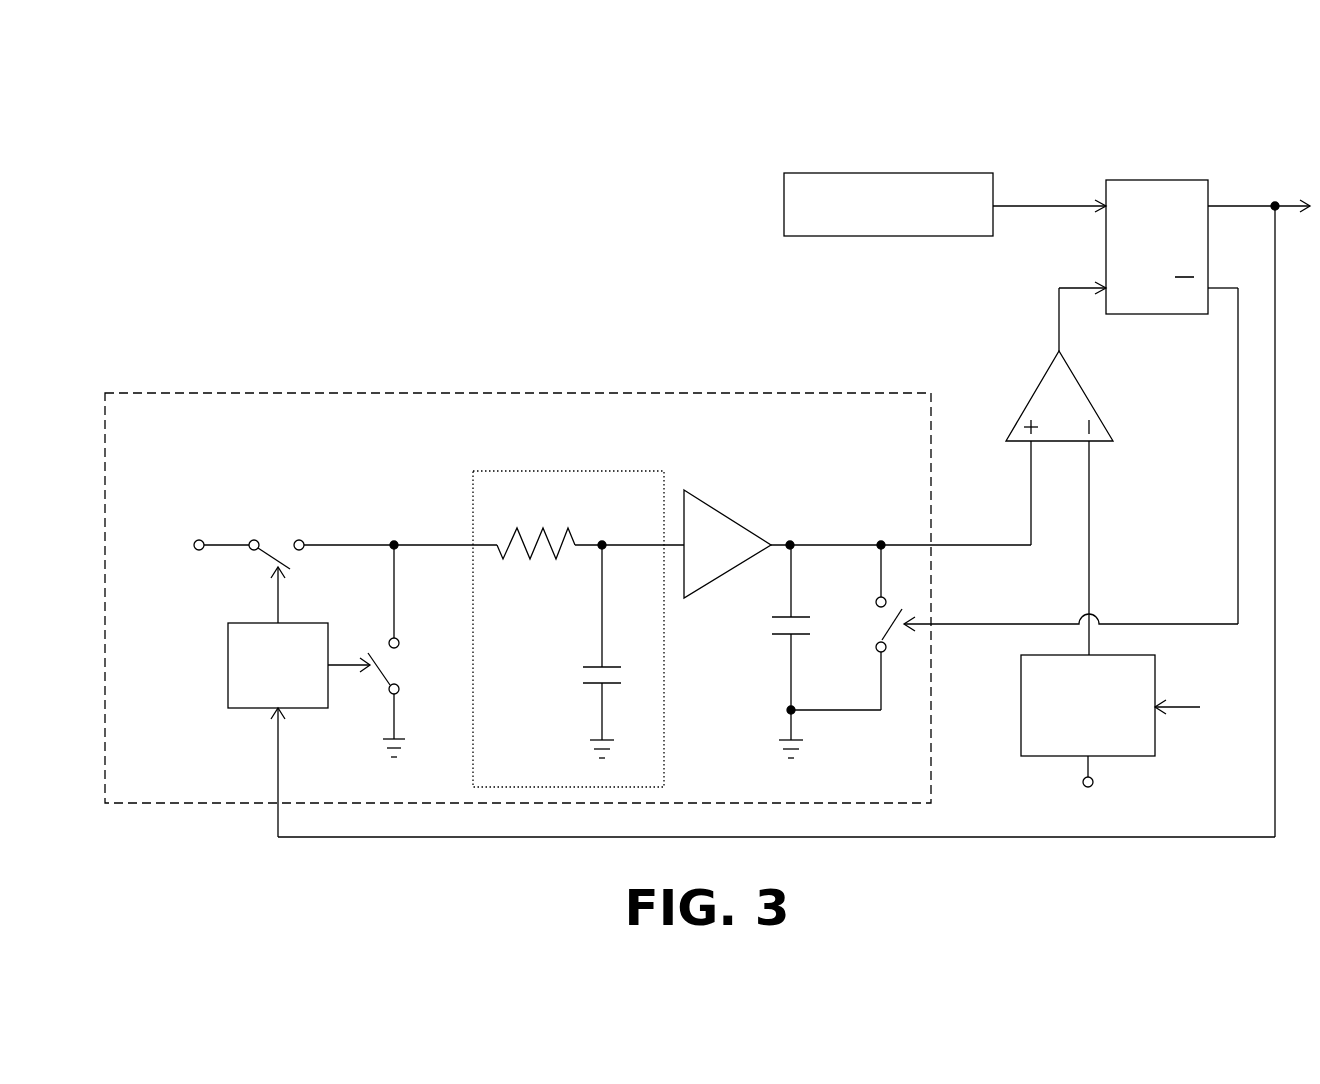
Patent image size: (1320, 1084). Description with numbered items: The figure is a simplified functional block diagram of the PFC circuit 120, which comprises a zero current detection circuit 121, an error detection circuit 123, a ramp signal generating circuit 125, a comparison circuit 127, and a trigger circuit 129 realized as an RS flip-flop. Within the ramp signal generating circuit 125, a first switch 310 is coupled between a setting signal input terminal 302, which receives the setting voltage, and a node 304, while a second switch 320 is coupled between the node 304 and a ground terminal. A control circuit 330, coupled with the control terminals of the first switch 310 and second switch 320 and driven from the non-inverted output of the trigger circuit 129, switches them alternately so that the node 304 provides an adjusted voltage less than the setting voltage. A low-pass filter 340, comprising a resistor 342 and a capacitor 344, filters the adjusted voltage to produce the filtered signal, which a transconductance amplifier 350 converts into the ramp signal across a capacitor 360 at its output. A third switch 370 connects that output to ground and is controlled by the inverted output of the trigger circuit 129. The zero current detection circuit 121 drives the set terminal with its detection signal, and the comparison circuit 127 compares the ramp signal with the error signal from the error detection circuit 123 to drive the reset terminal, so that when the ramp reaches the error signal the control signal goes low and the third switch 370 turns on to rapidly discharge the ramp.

The PFC circuit 120 is at (206, 132).
The zero current detection circuit 121 is at (888, 173).
The error detection circuit 123 is at (1021, 707).
The ramp signal generating circuit 125 is at (519, 393).
The comparison circuit 127 is at (1031, 397).
The trigger circuit 129 is at (1157, 180).
The setting signal input terminal 302 is at (198, 552).
The node 304 is at (393, 538).
The first switch 310 is at (276, 541).
The second switch 320 is at (392, 662).
The control circuit 330 is at (228, 665).
The low-pass filter 340 is at (568, 471).
The resistor 342 is at (543, 560).
The capacitor 344 is at (588, 675).
The transconductance amplifier 350 is at (728, 515).
The capacitor 360 is at (776, 625).
The third switch 370 is at (881, 622).